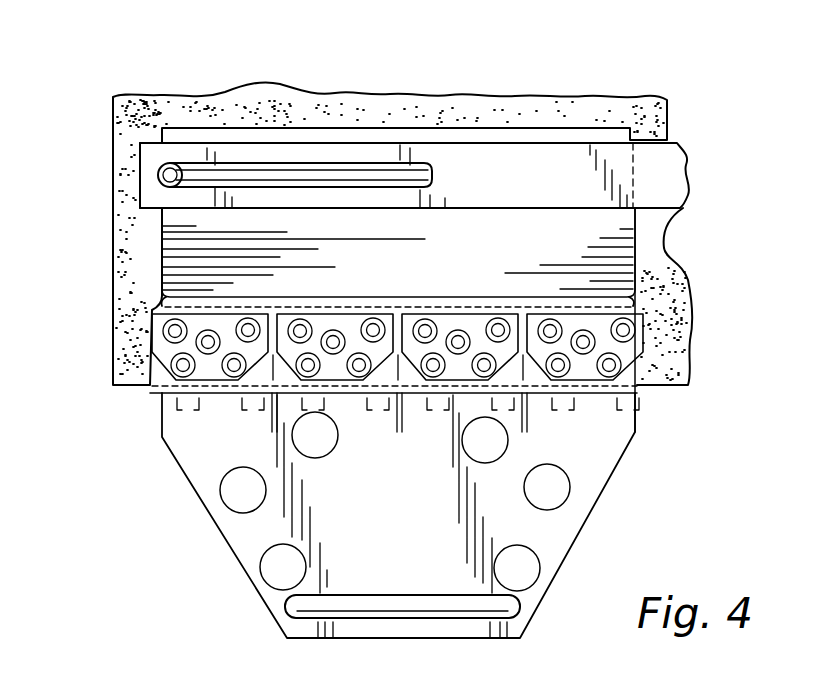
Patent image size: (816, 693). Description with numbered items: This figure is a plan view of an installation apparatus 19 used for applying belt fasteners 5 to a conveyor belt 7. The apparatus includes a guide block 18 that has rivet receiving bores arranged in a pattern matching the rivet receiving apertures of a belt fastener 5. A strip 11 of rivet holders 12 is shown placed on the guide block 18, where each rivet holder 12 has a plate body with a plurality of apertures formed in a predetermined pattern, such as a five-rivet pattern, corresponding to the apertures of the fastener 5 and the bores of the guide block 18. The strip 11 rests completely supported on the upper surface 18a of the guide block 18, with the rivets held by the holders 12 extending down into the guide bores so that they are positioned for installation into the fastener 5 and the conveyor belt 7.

The belt fastener 5 is at (640, 392).
The conveyor belt 7 is at (160, 107).
The strip of rivet holders 11 is at (132, 319).
The rivet holder 12 is at (620, 342).
The guide block 18 is at (150, 290).
The upper surface of the guide block 18a is at (603, 299).
The installation apparatus 19 is at (724, 145).